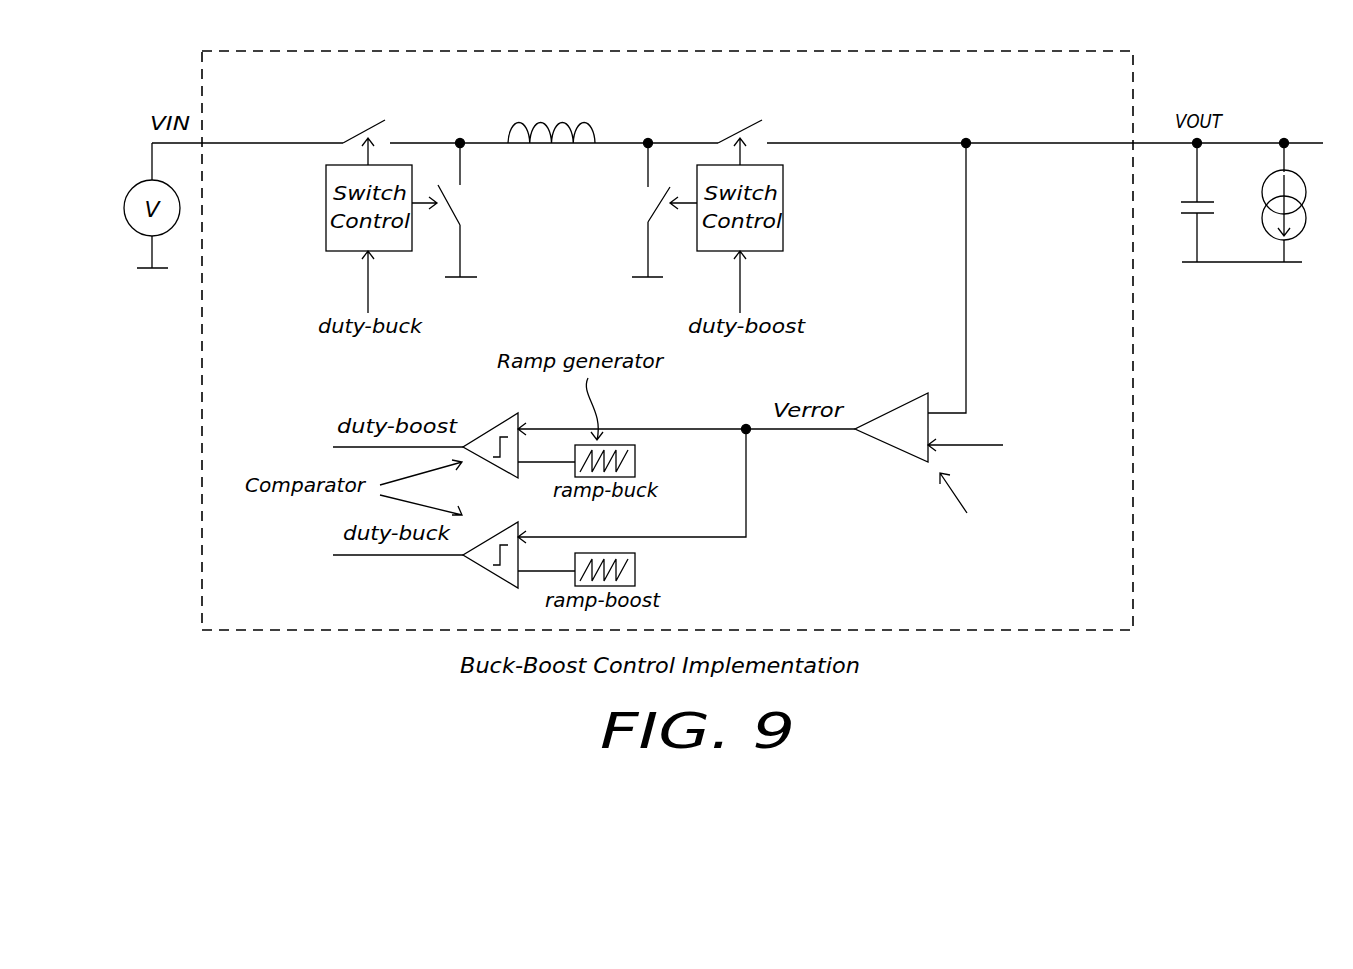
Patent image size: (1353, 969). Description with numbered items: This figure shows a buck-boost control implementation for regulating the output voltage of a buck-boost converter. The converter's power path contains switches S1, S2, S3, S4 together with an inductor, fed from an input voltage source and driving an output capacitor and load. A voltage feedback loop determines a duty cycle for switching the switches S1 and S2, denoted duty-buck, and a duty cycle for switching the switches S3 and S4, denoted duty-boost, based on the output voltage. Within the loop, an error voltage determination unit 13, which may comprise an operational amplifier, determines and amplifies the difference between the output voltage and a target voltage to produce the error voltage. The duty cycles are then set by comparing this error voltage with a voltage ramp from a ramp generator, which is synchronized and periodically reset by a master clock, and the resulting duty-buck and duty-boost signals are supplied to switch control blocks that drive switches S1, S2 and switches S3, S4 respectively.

The error voltage determination unit 13 is at (888, 411).
The switch S1 is at (364, 121).
The switch S2 is at (462, 210).
The switch S3 is at (646, 210).
The switch S4 is at (740, 121).